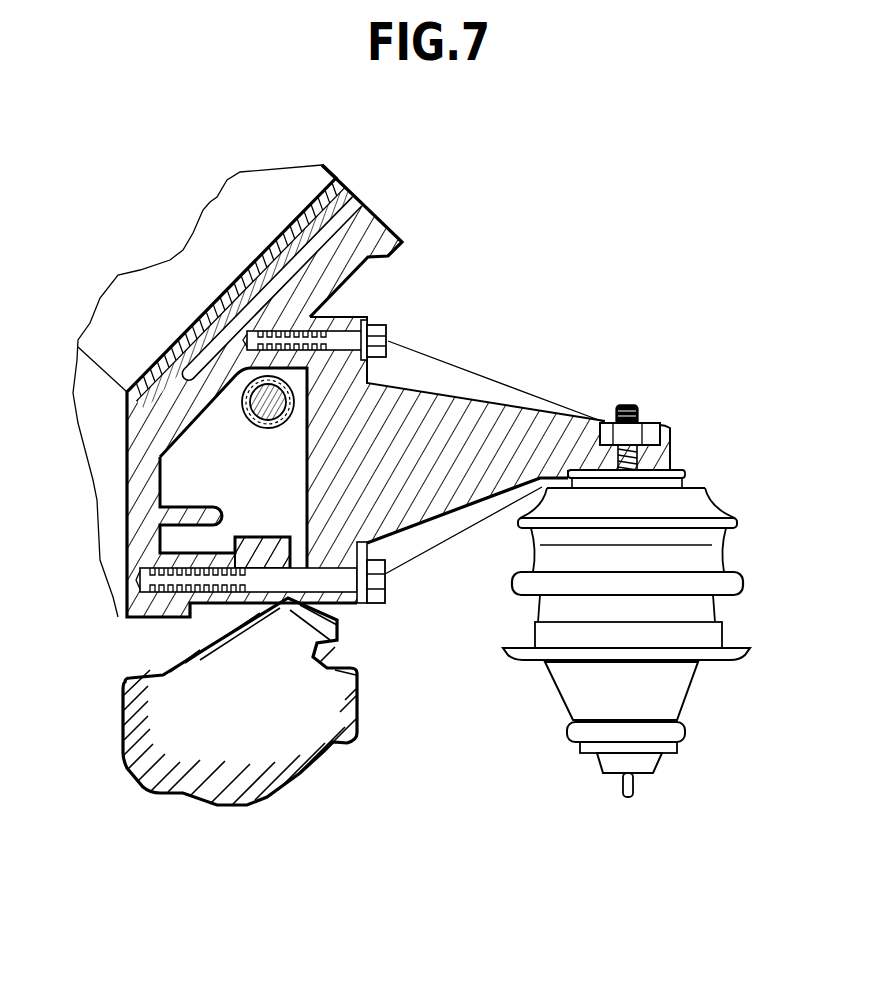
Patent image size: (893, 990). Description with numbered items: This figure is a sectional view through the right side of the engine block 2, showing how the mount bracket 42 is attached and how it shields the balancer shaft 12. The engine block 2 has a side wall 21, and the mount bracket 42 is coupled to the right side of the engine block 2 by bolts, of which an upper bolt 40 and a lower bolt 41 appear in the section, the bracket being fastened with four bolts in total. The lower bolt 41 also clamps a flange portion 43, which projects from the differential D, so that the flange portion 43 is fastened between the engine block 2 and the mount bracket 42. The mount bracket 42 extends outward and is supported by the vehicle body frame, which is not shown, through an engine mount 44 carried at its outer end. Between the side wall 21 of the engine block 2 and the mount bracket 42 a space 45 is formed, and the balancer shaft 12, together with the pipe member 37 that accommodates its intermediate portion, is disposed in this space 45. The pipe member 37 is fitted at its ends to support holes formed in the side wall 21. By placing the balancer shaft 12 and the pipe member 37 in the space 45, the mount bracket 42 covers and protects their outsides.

The engine block 2 is at (389, 227).
The side wall 21 is at (198, 421).
The pipe member 37 is at (247, 421).
The balancer shaft 12 is at (268, 428).
The space 45 is at (211, 500).
The flange portion 43 is at (258, 536).
The bolt 40 is at (389, 337).
The bolt 41 is at (388, 578).
The mount bracket 42 is at (478, 417).
The engine mount 44 is at (732, 567).
The differential D is at (237, 805).